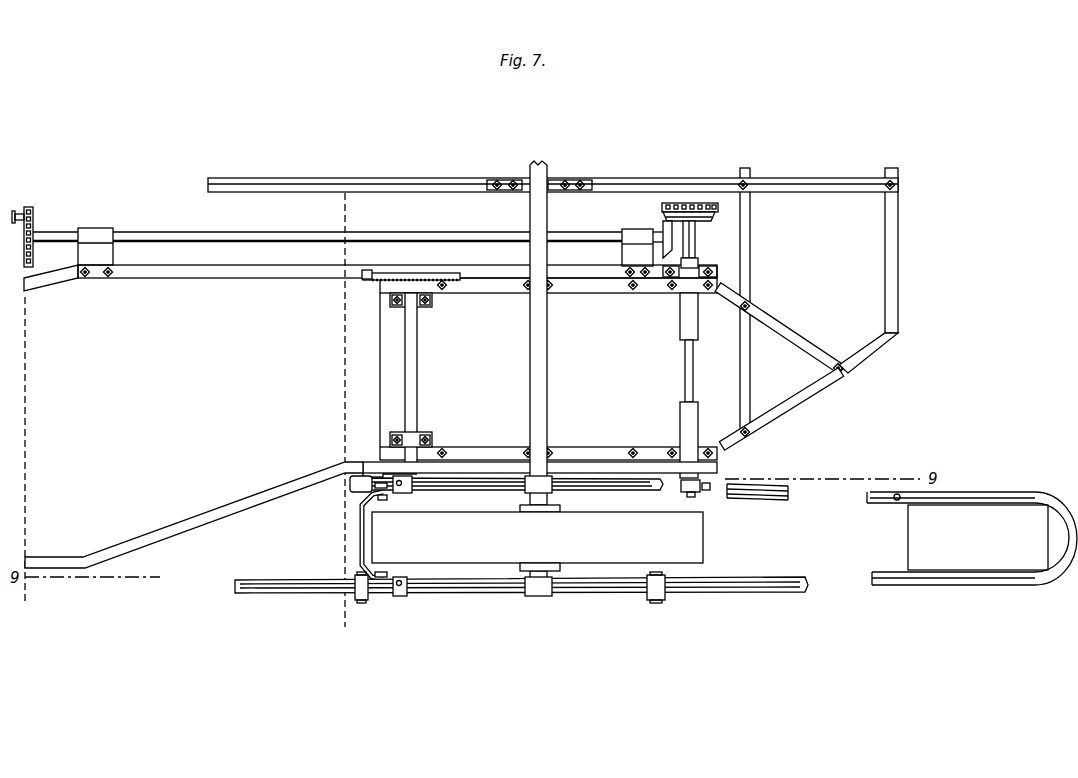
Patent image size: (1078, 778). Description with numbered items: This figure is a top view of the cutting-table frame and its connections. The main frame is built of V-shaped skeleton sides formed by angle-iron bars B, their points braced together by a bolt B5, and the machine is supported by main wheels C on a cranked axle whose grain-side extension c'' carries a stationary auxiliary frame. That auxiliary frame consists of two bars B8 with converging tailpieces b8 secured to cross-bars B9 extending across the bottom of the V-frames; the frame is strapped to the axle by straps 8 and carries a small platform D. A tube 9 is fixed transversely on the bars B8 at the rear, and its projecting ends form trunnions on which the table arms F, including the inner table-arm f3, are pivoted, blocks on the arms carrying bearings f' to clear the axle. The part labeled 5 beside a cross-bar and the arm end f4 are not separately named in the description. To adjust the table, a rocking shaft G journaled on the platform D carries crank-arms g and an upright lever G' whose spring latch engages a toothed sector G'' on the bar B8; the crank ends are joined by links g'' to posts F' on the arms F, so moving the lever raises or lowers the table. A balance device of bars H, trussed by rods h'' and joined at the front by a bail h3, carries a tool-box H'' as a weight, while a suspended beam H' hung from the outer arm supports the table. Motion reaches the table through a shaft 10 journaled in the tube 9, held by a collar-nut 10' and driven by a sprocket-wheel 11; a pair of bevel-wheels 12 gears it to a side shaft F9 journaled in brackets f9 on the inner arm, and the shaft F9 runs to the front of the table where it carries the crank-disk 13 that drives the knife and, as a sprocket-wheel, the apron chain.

The frame bar B is at (641, 179).
The cross-bar B9 is at (750, 242).
The auxiliary frame bar B8 is at (781, 331).
The converging tailpiece b8 is at (795, 400).
The bolt B5 is at (656, 293).
The table arm F is at (397, 263).
The post F' is at (540, 443).
The side shaft F9 is at (286, 233).
The bearing f' is at (719, 257).
The inner table-arm f3 is at (66, 283).
The lower angled arm f4 is at (76, 557).
The bracket f9 is at (105, 231).
The crank-arm g is at (406, 357).
The link g'' is at (362, 373).
The rocking shaft G is at (413, 379).
The upright lever G' is at (424, 278).
The toothed sector G'' is at (459, 303).
The platform D is at (426, 370).
The axle extension c'' is at (557, 371).
The main wheel C is at (537, 538).
The balance-lever bar H is at (569, 494).
The suspended beam H' is at (521, 596).
The tool-box H'' is at (972, 538).
The truss rod h'' is at (546, 549).
The bail h3 is at (372, 532).
The cross bar 5 is at (582, 293).
The strap 8 is at (582, 447).
The tube 9 is at (680, 335).
The shaft 10 is at (679, 409).
The collar-nut 10' is at (689, 498).
The sprocket-wheel 11 is at (660, 210).
The bevel-wheels 12 is at (690, 224).
The crank-disk 13 is at (36, 219).